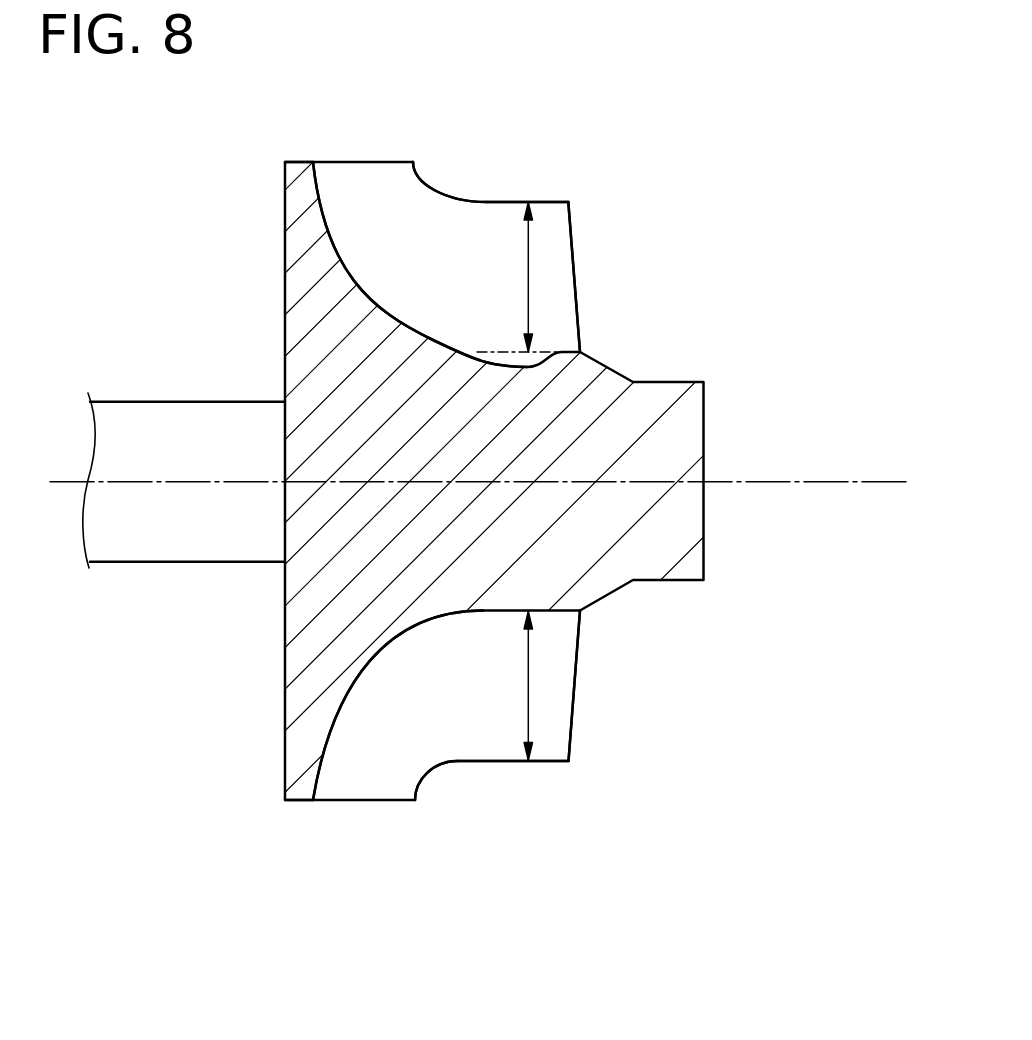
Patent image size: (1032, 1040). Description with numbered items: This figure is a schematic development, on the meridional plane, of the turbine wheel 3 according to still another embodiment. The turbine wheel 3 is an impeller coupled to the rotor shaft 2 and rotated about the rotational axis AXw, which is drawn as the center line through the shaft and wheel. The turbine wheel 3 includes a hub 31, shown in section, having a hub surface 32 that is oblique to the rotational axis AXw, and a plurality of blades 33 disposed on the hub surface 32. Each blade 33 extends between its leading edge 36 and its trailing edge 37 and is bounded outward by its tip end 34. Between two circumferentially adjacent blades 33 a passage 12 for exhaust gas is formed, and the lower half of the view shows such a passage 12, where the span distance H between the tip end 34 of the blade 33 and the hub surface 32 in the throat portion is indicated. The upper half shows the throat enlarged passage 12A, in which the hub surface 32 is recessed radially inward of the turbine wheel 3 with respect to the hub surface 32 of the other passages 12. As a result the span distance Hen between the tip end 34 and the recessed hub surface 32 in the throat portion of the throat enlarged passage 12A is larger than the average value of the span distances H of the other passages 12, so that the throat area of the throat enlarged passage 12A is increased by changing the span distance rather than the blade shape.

The rotor shaft 2 is at (152, 545).
The turbine wheel 3 is at (516, 520).
The passage 12 is at (446, 704).
The throat enlarged passage 12A is at (441, 284).
The hub 31 is at (347, 595).
The hub surface 32 is at (365, 290).
The blade 33 is at (495, 215).
The tip end 34 is at (442, 190).
The leading edge 36 is at (372, 162).
The trailing edge 37 is at (576, 295).
The span distance H is at (528, 678).
The span distance in throat enlarged passage Hen is at (528, 282).
The rotational axis AXw is at (875, 484).